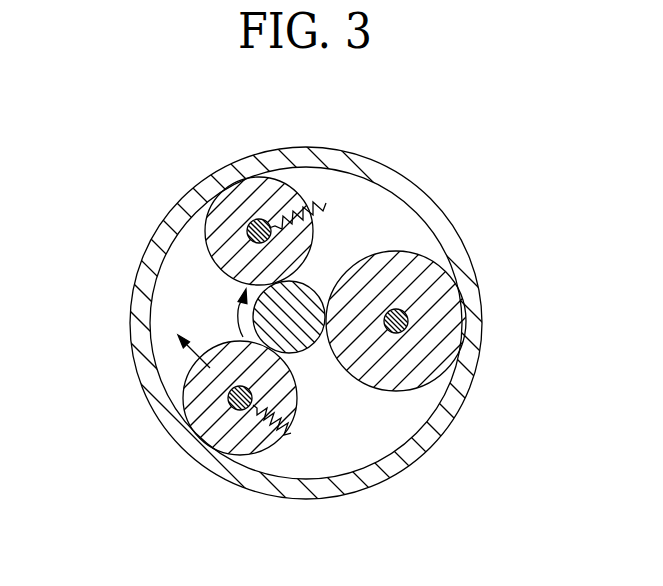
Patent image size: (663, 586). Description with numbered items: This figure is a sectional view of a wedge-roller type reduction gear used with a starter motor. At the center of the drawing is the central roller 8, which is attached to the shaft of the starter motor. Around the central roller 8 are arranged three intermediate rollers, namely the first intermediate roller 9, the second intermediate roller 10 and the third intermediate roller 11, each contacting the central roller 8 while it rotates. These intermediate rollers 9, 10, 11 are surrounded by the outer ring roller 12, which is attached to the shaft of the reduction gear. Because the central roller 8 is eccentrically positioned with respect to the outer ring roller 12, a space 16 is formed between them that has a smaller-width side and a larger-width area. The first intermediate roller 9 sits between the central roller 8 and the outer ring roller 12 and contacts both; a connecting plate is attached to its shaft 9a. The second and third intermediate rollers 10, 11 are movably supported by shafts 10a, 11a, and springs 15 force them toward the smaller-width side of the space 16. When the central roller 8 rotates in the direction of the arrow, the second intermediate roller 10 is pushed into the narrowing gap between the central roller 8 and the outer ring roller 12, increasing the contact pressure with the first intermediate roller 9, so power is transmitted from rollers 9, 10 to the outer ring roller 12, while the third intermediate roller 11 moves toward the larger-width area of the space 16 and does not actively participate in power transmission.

The central roller 8 is at (302, 295).
The first intermediate roller 9 is at (440, 306).
The shaft of the first intermediate roller 9a is at (408, 325).
The second intermediate roller 10 is at (210, 430).
The shaft of the second intermediate roller 10a is at (228, 400).
The third intermediate roller 11 is at (227, 215).
The shaft of the third intermediate roller 11a is at (255, 222).
The outer ring roller 12 is at (465, 370).
The springs 15 is at (330, 201).
The space 16 is at (387, 423).